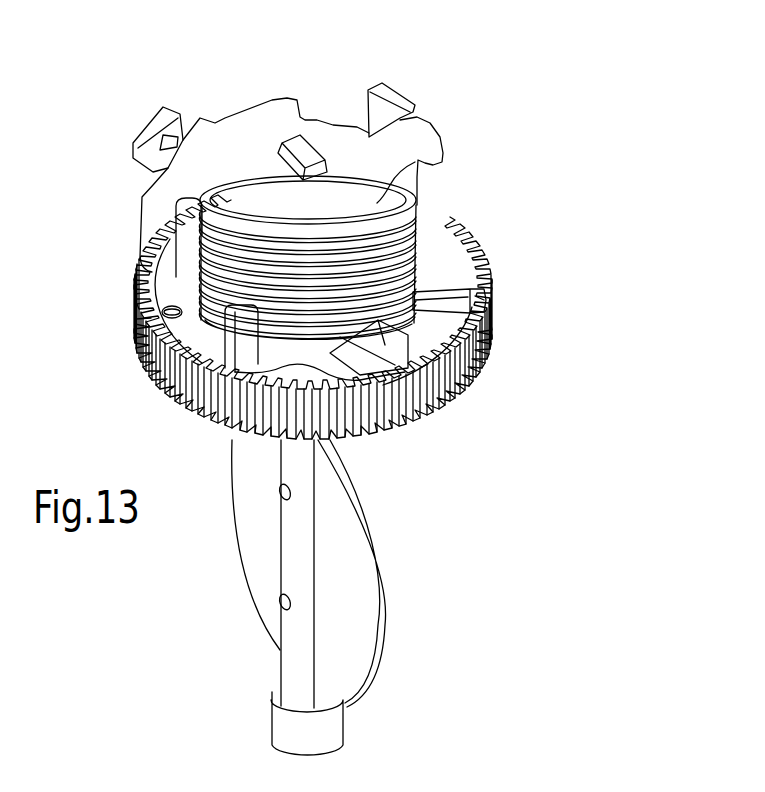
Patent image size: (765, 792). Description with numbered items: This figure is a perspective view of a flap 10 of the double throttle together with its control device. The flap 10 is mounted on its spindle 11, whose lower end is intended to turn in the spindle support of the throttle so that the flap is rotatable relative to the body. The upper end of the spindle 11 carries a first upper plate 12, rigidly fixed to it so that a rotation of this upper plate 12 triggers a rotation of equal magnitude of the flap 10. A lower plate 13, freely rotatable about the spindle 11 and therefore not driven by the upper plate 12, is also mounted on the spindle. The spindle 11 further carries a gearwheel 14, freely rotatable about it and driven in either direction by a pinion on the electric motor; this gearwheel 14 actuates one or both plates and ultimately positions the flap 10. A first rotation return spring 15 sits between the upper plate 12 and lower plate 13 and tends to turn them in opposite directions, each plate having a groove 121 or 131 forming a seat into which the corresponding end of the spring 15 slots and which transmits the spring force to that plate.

The flap 10 is at (360, 603).
The spindle 11 is at (287, 143).
The first upper plate 12 is at (253, 115).
The groove 121 is at (190, 117).
The lower plate 13 is at (443, 295).
The groove 131 is at (356, 450).
The gearwheel 14 is at (460, 390).
The first rotation return spring 15 is at (417, 262).